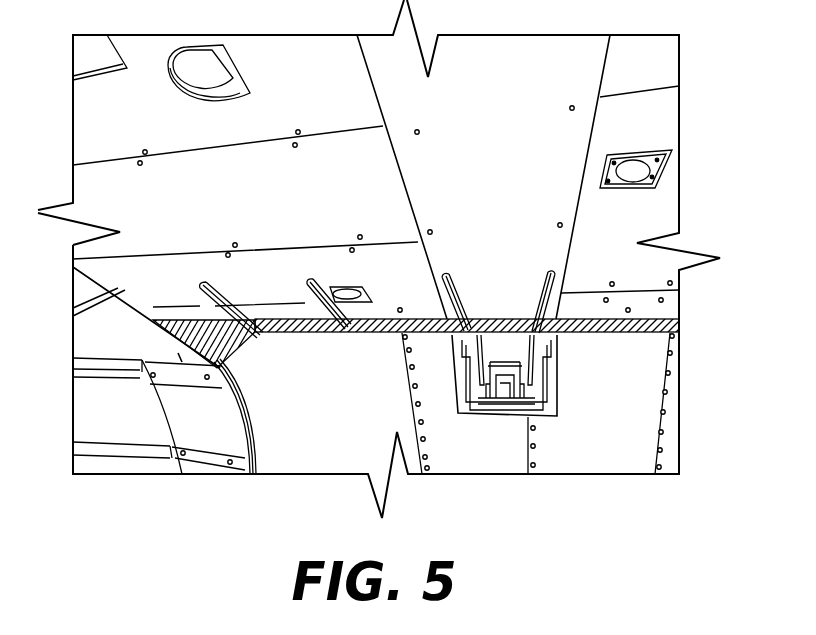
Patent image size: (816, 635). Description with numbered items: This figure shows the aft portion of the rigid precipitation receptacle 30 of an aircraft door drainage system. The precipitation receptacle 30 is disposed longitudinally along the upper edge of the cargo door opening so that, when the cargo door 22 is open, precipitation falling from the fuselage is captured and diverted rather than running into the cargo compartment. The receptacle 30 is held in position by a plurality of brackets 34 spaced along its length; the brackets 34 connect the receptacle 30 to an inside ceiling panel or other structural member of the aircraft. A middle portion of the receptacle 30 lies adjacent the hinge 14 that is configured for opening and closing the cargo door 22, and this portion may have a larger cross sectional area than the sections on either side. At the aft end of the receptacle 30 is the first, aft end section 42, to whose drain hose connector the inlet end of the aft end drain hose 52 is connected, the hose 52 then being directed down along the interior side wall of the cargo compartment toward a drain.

The hinge 14 is at (545, 369).
The cargo door 22 is at (640, 392).
The precipitation receptacle 30 is at (412, 306).
The brackets 34 is at (240, 300).
The aft end section 42 is at (193, 318).
The aft end drain hose 52 is at (232, 418).